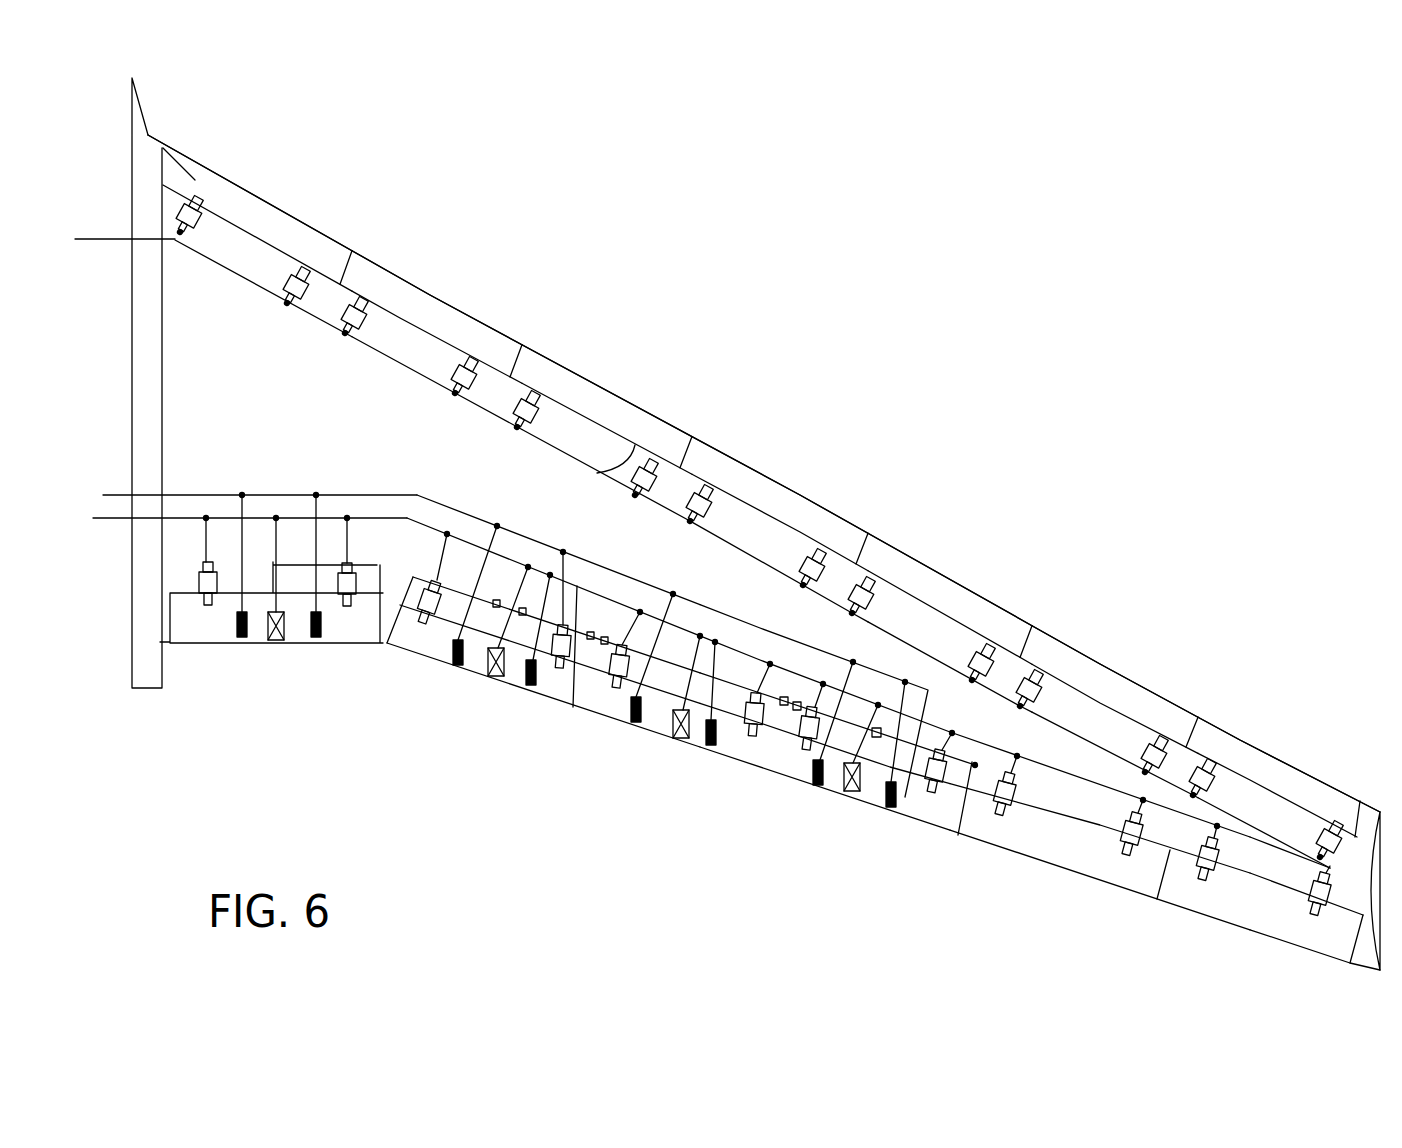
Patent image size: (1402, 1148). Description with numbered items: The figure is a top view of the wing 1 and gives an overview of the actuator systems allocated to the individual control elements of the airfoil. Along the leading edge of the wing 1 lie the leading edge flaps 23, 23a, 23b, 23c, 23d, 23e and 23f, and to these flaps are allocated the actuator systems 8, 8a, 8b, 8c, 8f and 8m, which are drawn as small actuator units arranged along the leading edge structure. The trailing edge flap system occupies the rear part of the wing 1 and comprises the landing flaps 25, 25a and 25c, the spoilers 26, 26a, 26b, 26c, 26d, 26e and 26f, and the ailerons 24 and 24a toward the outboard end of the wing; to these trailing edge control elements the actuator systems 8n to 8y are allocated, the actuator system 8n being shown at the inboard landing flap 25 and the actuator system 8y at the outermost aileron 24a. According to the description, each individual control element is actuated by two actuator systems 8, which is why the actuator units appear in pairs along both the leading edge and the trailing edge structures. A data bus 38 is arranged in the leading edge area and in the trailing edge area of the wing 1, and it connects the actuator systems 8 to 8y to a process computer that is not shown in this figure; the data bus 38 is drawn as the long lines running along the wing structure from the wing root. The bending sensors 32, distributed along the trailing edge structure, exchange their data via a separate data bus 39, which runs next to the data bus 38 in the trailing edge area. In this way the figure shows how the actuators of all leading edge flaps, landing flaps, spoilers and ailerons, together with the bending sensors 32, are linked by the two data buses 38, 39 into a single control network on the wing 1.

The wing 1 is at (957, 392).
The actuator system 8 is at (193, 190).
The actuator system 8a is at (310, 262).
The actuator system 8b is at (373, 298).
The actuator system 8c is at (488, 357).
The actuator system 8f is at (720, 481).
The actuator system 8m is at (1338, 822).
The actuator system 8n is at (193, 607).
The actuator system 8y is at (1320, 913).
The leading edge flap 23 is at (272, 205).
The leading edge flap 23a is at (443, 300).
The leading edge flap 23b is at (613, 395).
The leading edge flap 23c is at (775, 482).
The leading edge flap 23d is at (945, 575).
The leading edge flap 23e is at (1148, 690).
The leading edge flap 23f is at (1283, 760).
The aileron 24 is at (1068, 870).
The aileron 24a is at (1233, 925).
The landing flap 25 is at (222, 643).
The landing flap 25a is at (550, 700).
The landing flap 25c is at (914, 818).
The spoiler 26 is at (327, 583).
The spoiler 26a is at (413, 600).
The spoiler 26b is at (580, 652).
The spoiler 26c is at (665, 660).
The spoiler 26d is at (762, 693).
The spoiler 26e is at (800, 745).
The spoiler 26f is at (975, 768).
The bending sensor 32 is at (257, 630).
The data bus 38 is at (105, 240).
The data bus 39 is at (112, 493).